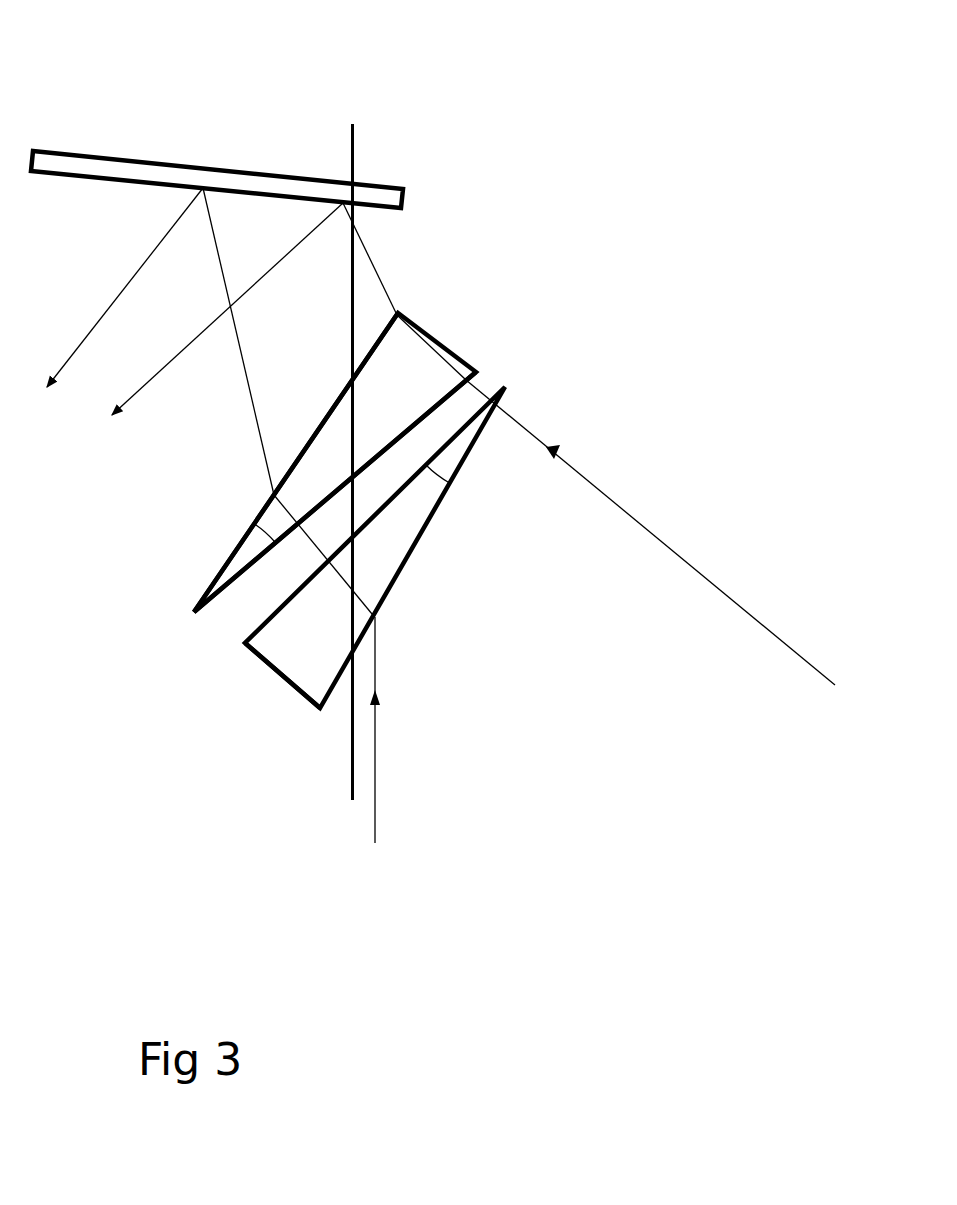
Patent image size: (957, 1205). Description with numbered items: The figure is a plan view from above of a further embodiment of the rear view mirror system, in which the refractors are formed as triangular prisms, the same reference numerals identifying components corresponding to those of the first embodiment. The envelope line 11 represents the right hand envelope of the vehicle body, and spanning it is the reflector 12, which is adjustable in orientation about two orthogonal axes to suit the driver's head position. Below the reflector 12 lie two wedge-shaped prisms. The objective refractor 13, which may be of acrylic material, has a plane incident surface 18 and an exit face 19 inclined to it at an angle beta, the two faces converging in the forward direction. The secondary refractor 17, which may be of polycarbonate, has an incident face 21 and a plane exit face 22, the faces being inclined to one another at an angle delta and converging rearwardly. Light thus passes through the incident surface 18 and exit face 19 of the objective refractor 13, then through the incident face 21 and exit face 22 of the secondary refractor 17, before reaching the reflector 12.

The envelope line 11 is at (355, 165).
The reflector 12 is at (110, 158).
The objective refractor 13 is at (389, 545).
The secondary refractor 17 is at (413, 357).
The incident surface 18 is at (388, 600).
The exit face 19 is at (253, 632).
The incident face 21 is at (440, 403).
The exit face 22 is at (293, 458).